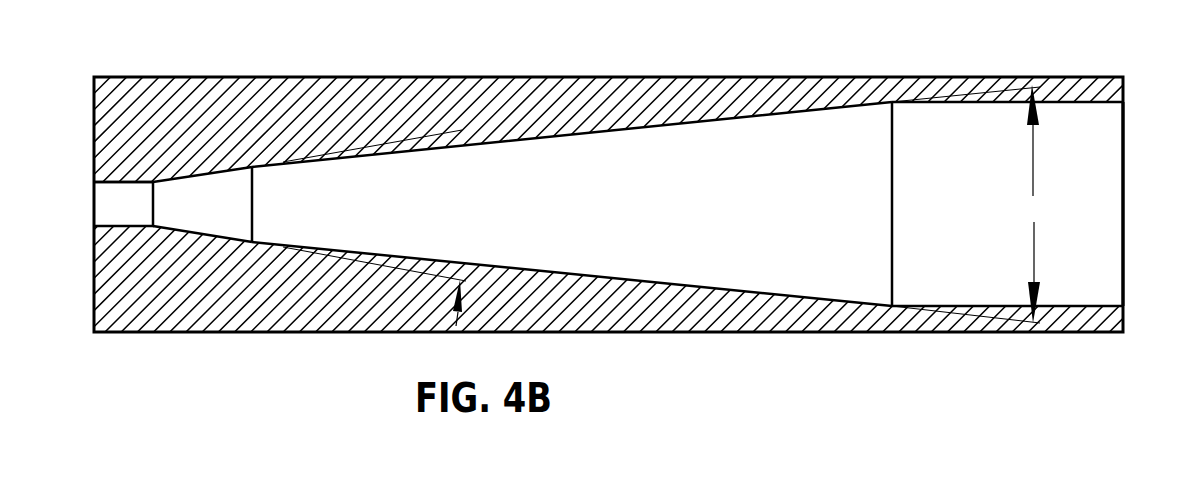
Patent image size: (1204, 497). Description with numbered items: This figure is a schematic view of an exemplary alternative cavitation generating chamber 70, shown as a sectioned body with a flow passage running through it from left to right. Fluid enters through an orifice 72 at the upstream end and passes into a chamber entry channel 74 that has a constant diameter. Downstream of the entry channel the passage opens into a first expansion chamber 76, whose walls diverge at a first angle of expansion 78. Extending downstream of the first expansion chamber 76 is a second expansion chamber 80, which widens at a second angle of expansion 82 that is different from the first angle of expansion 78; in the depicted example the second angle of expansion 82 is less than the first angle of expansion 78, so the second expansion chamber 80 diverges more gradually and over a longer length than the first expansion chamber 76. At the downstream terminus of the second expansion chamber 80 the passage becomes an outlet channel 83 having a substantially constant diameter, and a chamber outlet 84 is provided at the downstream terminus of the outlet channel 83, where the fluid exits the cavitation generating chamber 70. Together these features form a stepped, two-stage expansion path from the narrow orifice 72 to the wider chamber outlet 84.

The cavitation generating chamber 70 is at (119, 43).
The orifice 72 is at (93, 205).
The chamber entry channel 74 is at (113, 191).
The first expansion chamber 76 is at (212, 172).
The first angle of expansion 78 is at (456, 98).
The second expansion chamber 80 is at (578, 272).
The second angle of expansion 82 is at (1037, 204).
The outlet channel 83 is at (1068, 306).
The chamber outlet 84 is at (1123, 182).